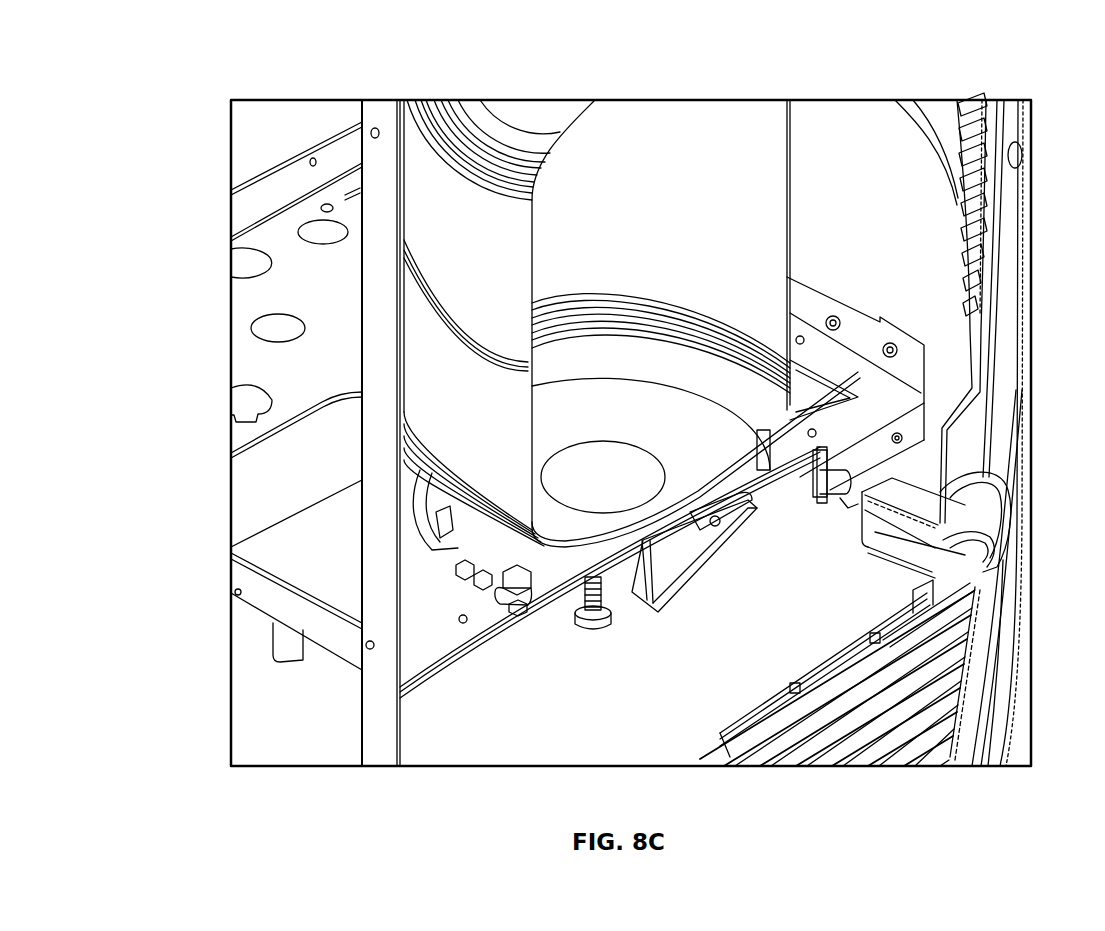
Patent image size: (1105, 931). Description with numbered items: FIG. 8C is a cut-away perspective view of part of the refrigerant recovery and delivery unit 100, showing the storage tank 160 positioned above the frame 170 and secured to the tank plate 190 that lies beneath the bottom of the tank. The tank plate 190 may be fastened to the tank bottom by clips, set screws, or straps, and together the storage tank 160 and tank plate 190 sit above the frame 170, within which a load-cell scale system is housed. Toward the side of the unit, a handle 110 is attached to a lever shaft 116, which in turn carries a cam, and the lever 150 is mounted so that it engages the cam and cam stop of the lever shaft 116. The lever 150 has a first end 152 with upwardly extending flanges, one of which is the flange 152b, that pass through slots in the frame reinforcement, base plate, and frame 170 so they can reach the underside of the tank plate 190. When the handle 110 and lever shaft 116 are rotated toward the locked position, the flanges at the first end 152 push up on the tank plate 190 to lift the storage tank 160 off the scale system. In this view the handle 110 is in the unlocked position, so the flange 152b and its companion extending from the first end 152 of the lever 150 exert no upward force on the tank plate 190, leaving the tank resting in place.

The refrigerant recovery and delivery unit 100 is at (975, 81).
The handle 110 is at (983, 565).
The lever shaft 116 is at (850, 508).
The lever 150 is at (693, 533).
The first end 152 is at (630, 593).
The upwardly extending flange 152b is at (670, 590).
The storage tank 160 is at (430, 171).
The frame 170 is at (273, 230).
The tank plate 190 is at (540, 587).